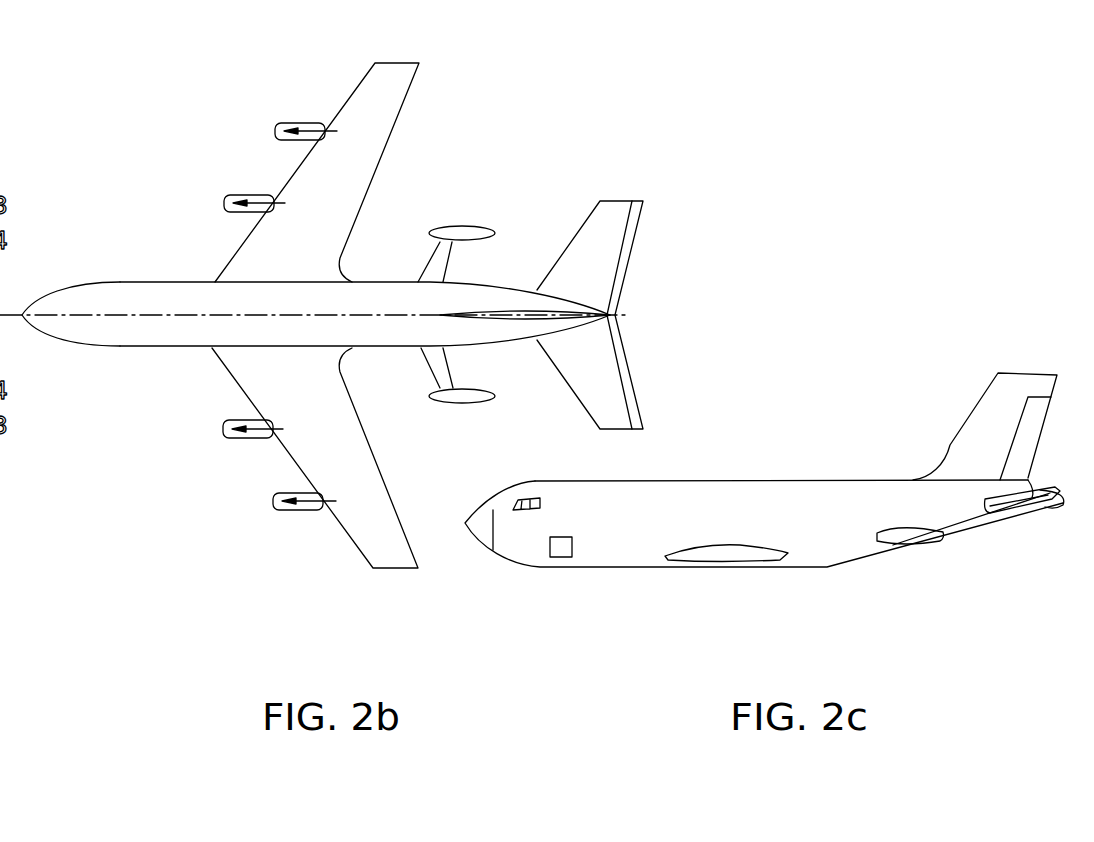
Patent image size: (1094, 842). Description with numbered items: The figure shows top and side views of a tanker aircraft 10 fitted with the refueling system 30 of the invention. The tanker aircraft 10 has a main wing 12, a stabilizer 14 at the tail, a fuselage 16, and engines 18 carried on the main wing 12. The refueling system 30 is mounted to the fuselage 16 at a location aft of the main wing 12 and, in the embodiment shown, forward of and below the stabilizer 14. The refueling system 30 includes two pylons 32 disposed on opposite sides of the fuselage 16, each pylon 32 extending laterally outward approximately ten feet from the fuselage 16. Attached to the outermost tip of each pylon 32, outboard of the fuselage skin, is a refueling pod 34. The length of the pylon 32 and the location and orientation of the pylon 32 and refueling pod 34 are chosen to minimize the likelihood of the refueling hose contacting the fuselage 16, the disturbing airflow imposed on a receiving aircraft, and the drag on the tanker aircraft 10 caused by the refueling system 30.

In FIG. 2B, the tanker aircraft 10 is at (132, 252).
In FIG. 2C, the tanker aircraft 10 is at (512, 538).
In FIG. 2B, the main wing 12 is at (366, 153).
In FIG. 2C, the main wing 12 is at (728, 557).
In FIG. 2B, the stabilizer 14 is at (610, 213).
In FIG. 2C, the stabilizer 14 is at (1030, 488).
In FIG. 2B, the fuselage 16 is at (123, 345).
In FIG. 2C, the fuselage 16 is at (683, 487).
In FIG. 2B, the engines 18 is at (282, 122).
In FIG. 2B, the refueling system 30 is at (498, 230).
In FIG. 2C, the refueling system 30 is at (892, 547).
In FIG. 2B, the pylon 32 is at (437, 263).
In FIG. 2B, the refueling pod 34 is at (455, 232).
In FIG. 2C, the refueling pod 34 is at (907, 532).